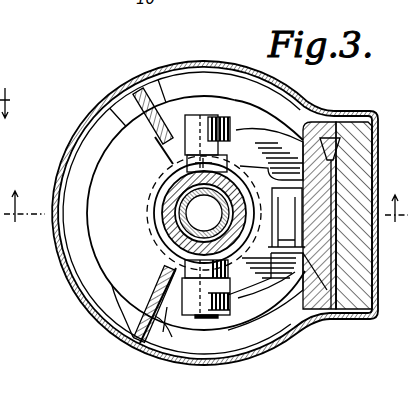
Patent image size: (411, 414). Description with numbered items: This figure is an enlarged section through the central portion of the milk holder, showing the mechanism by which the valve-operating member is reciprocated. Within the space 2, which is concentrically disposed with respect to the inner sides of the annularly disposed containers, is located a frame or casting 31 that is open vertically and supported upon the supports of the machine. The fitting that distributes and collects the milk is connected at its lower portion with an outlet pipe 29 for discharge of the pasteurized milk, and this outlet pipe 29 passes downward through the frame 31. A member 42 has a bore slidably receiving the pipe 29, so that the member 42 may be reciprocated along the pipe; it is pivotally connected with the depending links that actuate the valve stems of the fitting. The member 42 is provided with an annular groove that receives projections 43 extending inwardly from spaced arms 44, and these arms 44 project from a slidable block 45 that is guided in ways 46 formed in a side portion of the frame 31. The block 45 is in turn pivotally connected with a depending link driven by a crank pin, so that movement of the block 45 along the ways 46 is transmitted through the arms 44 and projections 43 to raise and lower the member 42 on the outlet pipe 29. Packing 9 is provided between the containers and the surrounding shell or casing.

The space 2 is at (196, 213).
The packing 9 is at (204, 155).
The outlet pipe 29 is at (204, 213).
The frame or casting 31 is at (130, 326).
The member 42 is at (160, 203).
The projections 43 is at (220, 157).
The spaced arms 44 is at (248, 158).
The slidable block 45 is at (355, 115).
The ways 46 is at (323, 134).